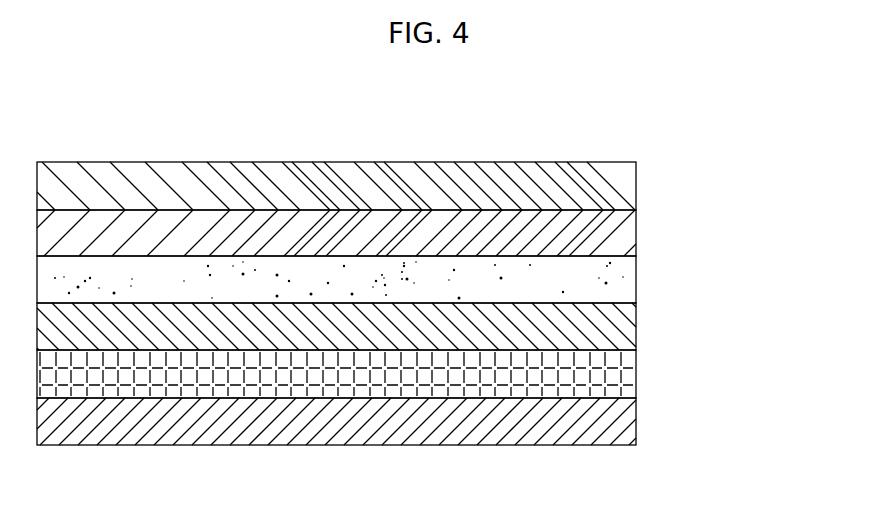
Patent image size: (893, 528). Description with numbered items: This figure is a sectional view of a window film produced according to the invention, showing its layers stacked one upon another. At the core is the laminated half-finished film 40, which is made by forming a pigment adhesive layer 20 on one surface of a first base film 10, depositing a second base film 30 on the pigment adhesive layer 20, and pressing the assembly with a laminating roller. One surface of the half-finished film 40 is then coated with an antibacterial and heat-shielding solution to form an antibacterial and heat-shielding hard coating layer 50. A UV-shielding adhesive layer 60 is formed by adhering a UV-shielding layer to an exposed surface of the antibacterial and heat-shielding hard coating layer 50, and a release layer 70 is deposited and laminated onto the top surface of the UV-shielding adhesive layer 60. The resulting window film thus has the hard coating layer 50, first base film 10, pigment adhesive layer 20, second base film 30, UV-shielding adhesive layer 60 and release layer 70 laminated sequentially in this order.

The antibacterial and heat-shielding hard coating layer 50 is at (636, 188).
The first base film 10 is at (636, 237).
The pigment adhesive layer 20 is at (636, 280).
The second base film 30 is at (636, 333).
The laminated half-finished film 40 is at (448, 266).
The UV-shielding adhesive layer 60 is at (636, 378).
The release layer 70 is at (636, 424).